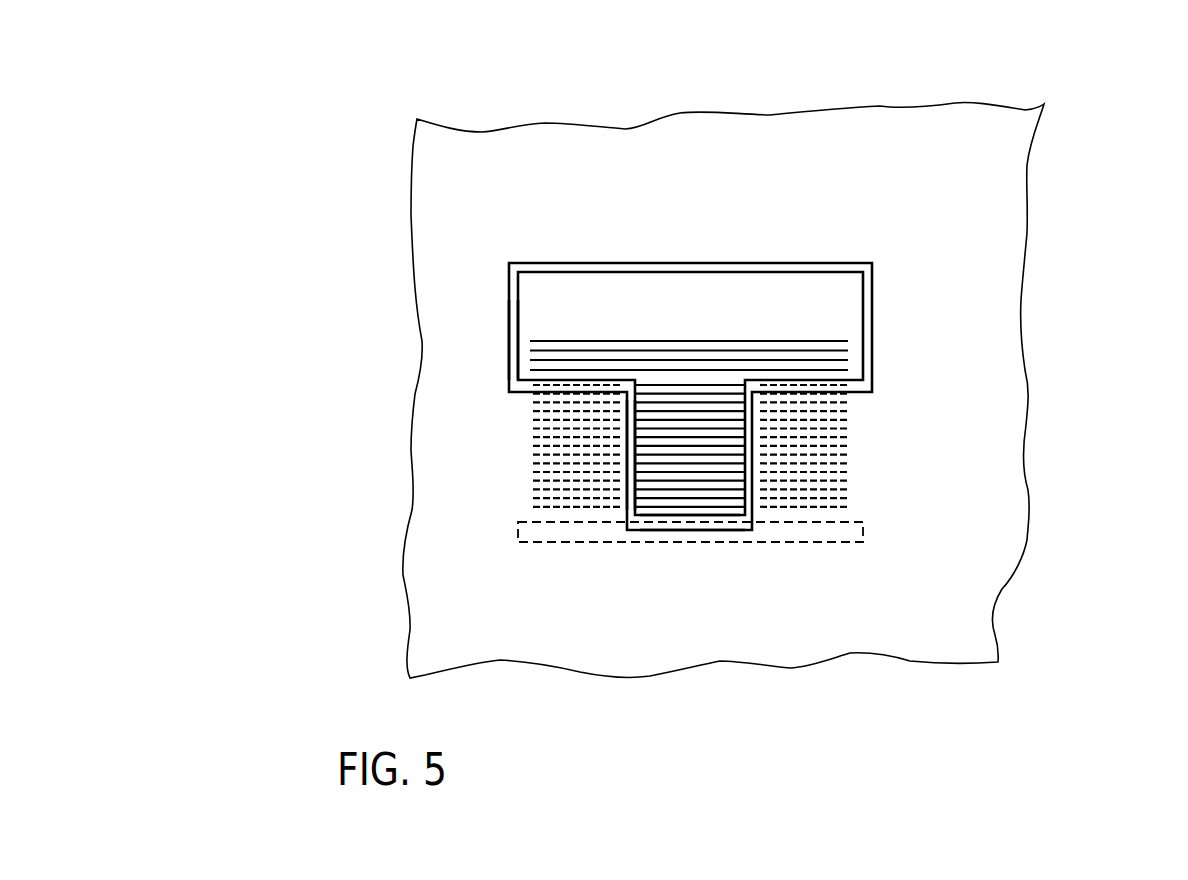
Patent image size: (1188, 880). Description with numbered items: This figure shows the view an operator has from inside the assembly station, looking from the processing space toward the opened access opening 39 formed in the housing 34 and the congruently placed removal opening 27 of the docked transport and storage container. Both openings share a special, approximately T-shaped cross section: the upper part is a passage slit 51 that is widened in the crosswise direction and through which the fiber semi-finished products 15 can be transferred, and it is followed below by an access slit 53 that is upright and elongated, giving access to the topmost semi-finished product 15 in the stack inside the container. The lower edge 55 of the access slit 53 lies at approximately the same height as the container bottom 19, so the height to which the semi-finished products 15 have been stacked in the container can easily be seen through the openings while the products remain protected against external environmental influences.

The pre-impregnated textile semi-finished products 15 is at (712, 342).
The housing bottom 19 is at (838, 523).
The removal opening 27 is at (863, 302).
The housing 34 is at (1021, 300).
The access opening 39 is at (723, 263).
The passage slit 51 is at (517, 346).
The access slit 53 is at (634, 467).
The lower edge 55 is at (714, 514).